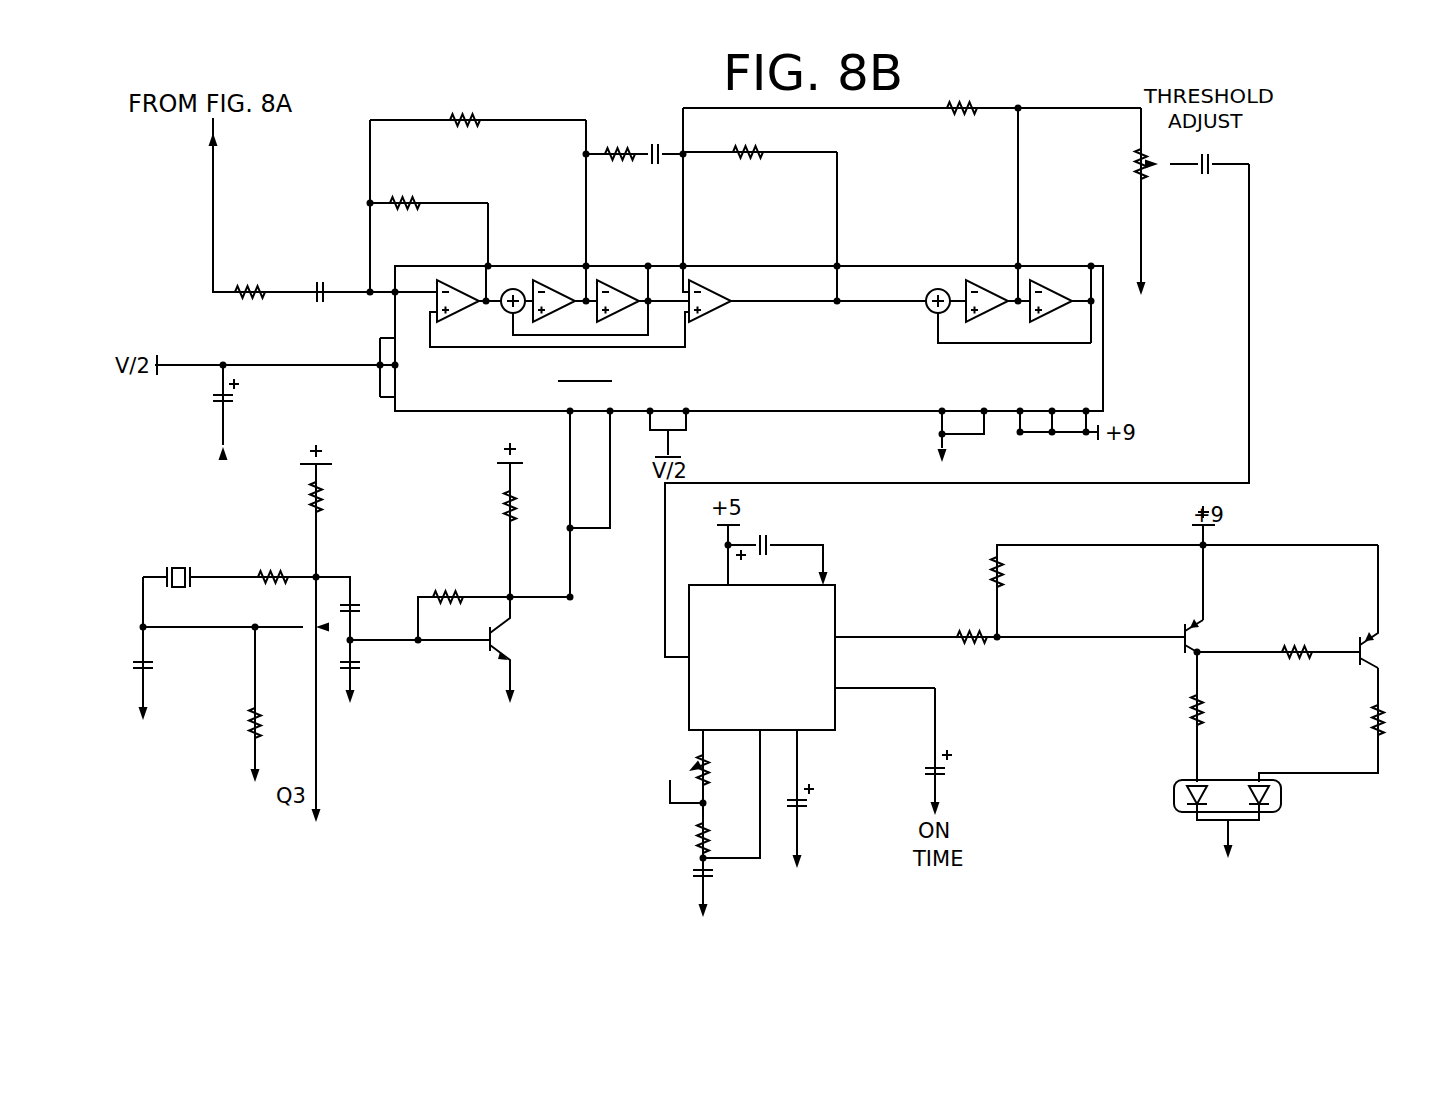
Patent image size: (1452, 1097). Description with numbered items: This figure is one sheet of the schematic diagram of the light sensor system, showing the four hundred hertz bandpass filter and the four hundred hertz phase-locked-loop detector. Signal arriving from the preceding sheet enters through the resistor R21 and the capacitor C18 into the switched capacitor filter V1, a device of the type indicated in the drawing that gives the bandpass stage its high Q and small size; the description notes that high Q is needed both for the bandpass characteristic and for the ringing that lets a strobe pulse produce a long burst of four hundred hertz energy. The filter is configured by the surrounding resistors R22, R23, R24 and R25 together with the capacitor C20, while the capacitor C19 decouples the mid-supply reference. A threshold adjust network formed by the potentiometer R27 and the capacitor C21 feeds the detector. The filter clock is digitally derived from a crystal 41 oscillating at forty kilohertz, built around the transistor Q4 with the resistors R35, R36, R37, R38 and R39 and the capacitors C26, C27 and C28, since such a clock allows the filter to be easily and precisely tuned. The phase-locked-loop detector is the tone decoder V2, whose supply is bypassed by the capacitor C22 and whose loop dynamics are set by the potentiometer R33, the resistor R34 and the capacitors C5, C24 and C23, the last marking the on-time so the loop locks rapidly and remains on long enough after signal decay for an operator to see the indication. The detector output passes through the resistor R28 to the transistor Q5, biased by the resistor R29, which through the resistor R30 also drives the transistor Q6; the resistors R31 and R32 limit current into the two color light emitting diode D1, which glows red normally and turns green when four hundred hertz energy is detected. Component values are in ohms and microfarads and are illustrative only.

The 22K resistor R21 is at (249, 293).
The .1 capacitor C18 is at (325, 290).
The 10 capacitor C19 is at (212, 405).
The 10K resistor R22 is at (429, 205).
The 220K resistor R23 is at (478, 124).
The 22K resistor R24 is at (634, 156).
The .1 capacitor C20 is at (655, 127).
The 10K resistor R25 is at (850, 133).
The 10K threshold adjust potentiometer R27 is at (1118, 201).
The .1 capacitor C21 is at (1197, 166).
The MF-10 switched capacitor filter V1 is at (662, 258).
The 1K resistor R35 is at (517, 520).
The 10K resistor R36 is at (494, 605).
The transistor Q4 is at (432, 650).
The 1K resistor R37 is at (306, 633).
The 40KHZ crystal 41 is at (220, 579).
The 10K resistor R38 is at (272, 581).
The 10 capacitor C28 is at (221, 648).
The 22M resistor R39 is at (261, 705).
The .01 capacitor C27 is at (357, 608).
The .01 capacitor C26 is at (369, 676).
The 567 tone decoder V2 is at (762, 657).
The 10 capacitor C22 is at (778, 549).
The 2K potentiometer R33 is at (696, 774).
The 8.2K resistor R34 is at (697, 838).
The .27 capacitor C5 is at (697, 881).
The 2.2 capacitor C24 is at (816, 811).
The 22 on-time capacitor C23 is at (910, 745).
The 10K resistor R28 is at (1010, 639).
The 10K resistor R29 is at (1158, 591).
The transistor Q5 is at (1210, 636).
The 10K resistor R30 is at (1278, 648).
The 270 resistor R31 is at (1198, 717).
The transistor Q6 is at (1385, 606).
The 270 resistor R32 is at (1343, 725).
The green/red LED D1 is at (1222, 808).